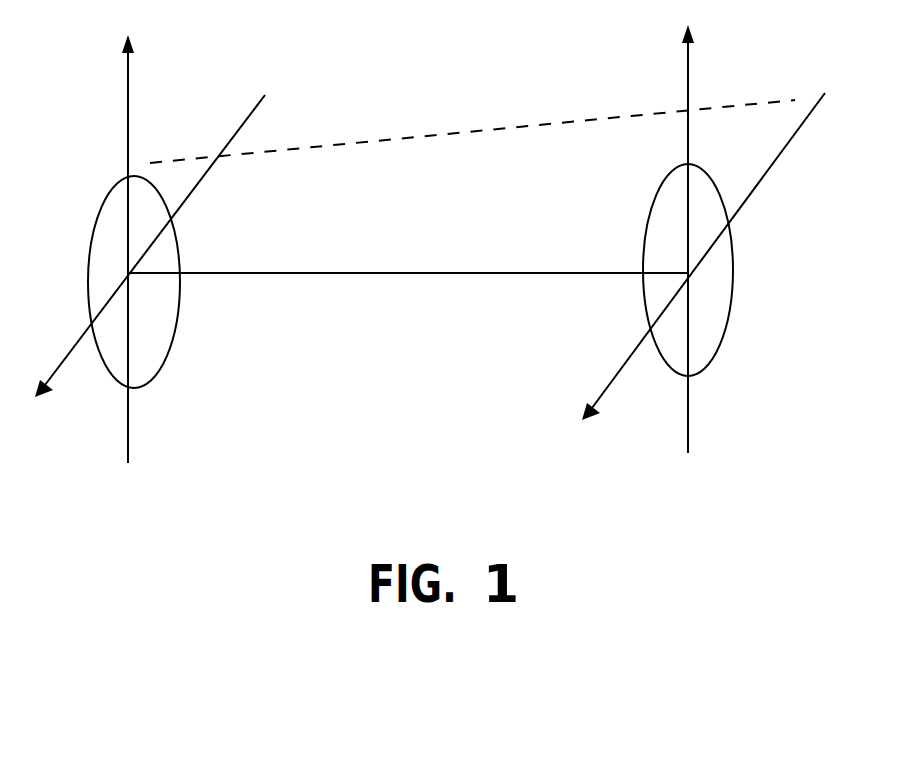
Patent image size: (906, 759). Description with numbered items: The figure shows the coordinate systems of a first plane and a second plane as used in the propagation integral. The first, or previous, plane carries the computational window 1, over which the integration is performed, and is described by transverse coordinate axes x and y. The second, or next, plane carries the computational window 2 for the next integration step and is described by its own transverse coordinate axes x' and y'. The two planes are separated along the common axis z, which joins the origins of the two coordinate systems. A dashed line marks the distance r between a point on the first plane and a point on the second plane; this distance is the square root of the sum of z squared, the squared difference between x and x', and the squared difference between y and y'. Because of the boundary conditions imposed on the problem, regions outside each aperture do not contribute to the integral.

The computational window 1 is at (148, 367).
The computational window 2 is at (702, 327).
The x coordinate axis x is at (142, 238).
The y coordinate axis y is at (150, 274).
The z axis z is at (408, 257).
The distance r is at (472, 131).
The x' coordinate axis x' is at (708, 232).
The y' coordinate axis y' is at (703, 277).